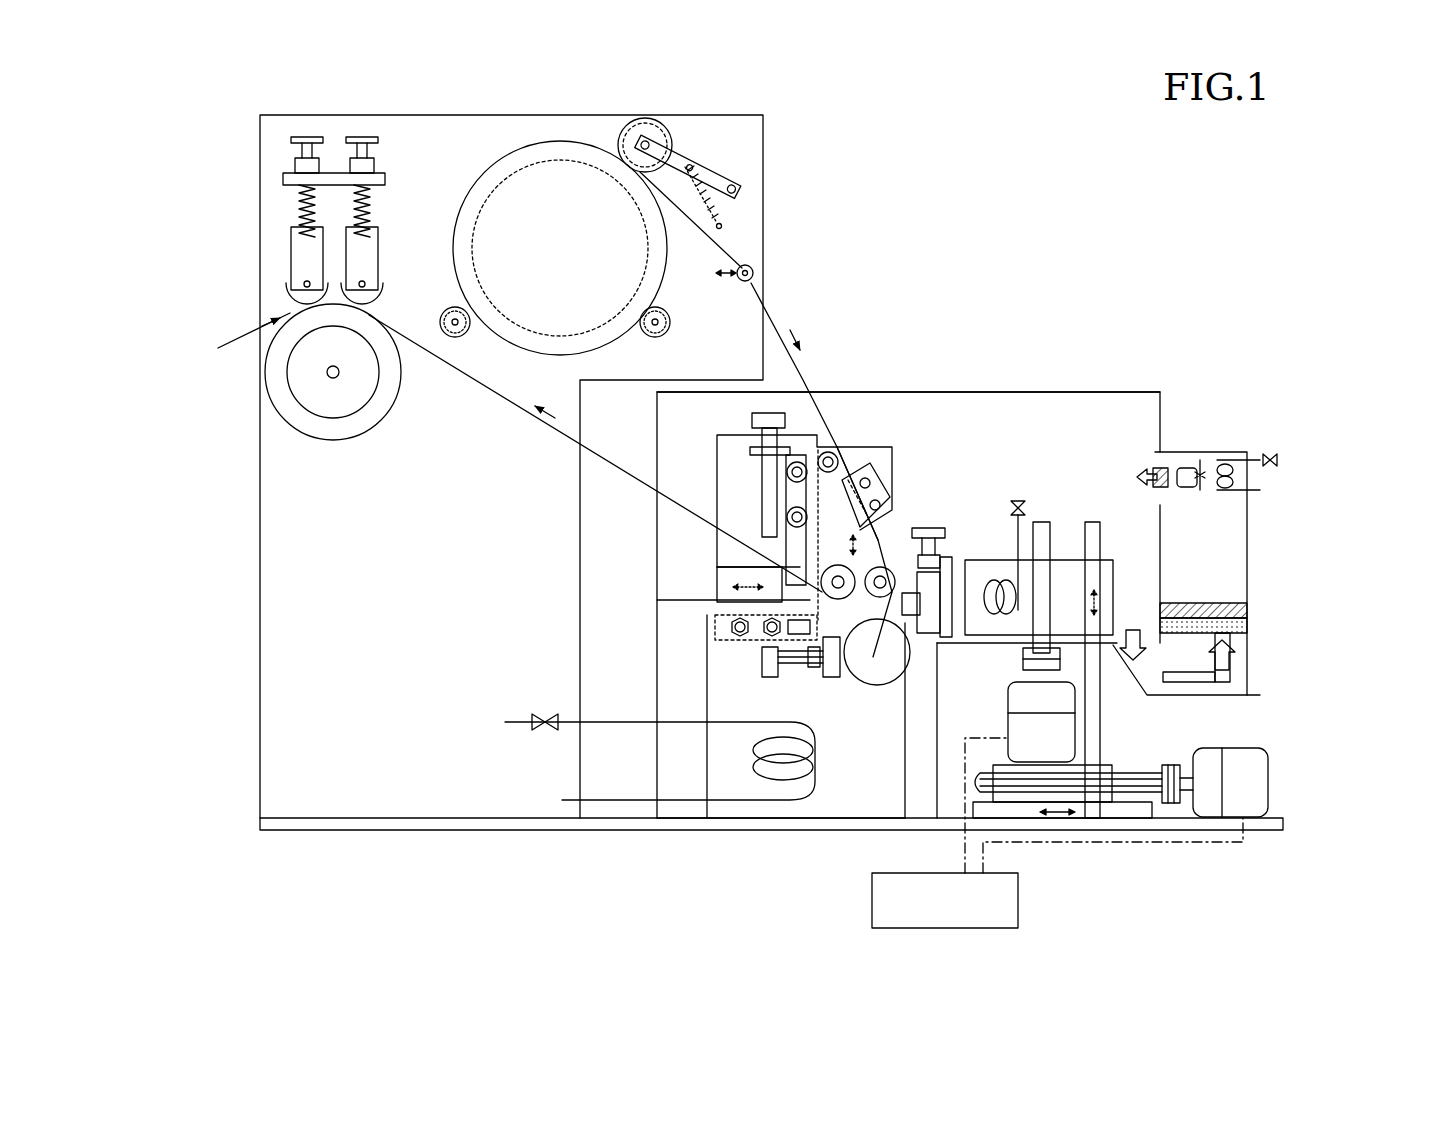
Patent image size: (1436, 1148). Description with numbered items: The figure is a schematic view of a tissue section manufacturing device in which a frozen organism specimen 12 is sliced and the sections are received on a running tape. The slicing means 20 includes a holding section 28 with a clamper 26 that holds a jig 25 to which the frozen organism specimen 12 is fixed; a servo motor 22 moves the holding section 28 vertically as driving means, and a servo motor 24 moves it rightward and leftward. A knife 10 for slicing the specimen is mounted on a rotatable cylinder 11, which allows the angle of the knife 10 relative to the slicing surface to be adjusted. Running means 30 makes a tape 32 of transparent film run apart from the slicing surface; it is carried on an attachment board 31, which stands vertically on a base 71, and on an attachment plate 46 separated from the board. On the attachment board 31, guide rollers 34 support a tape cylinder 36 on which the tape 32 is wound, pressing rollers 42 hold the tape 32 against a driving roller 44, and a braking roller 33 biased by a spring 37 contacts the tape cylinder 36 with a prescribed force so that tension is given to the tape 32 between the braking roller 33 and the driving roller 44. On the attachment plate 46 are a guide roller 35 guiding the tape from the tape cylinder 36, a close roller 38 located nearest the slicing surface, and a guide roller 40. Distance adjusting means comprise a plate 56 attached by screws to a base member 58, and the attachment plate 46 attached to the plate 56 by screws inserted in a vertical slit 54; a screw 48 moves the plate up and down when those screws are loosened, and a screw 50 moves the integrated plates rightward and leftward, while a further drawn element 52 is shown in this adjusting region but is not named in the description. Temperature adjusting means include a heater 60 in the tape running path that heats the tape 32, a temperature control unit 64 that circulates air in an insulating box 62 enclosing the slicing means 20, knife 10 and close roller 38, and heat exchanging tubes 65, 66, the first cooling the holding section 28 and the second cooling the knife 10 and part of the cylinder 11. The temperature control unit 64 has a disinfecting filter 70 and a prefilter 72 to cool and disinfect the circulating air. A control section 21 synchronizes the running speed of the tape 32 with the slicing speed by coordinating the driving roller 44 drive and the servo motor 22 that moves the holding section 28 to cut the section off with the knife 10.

The knife 10 is at (867, 673).
The cylinder 11 is at (875, 680).
The frozen organism specimen 12 is at (930, 555).
The slicing means 20 is at (1017, 415).
The control section 21 is at (1020, 887).
The servo motor 22 is at (1008, 728).
The servo motor 24 is at (1257, 758).
The jig 25 is at (917, 637).
The clamper 26 is at (978, 580).
The holding section 28 is at (1063, 558).
The running means 30 is at (600, 122).
The attachment board 31 is at (275, 545).
The tape 32 is at (773, 310).
The braking roller 33 is at (660, 125).
The guide rollers 34 is at (470, 335).
The guide roller 35 is at (830, 450).
The tape cylinder 36 is at (505, 165).
The spring 37 is at (710, 190).
The close roller 38 is at (893, 450).
The guide roller 40 is at (657, 598).
The pressing rollers 42 is at (295, 252).
The driving roller 44 is at (348, 430).
The attachment plate 46 is at (862, 447).
The screw 48 is at (763, 473).
The screw 50 is at (800, 670).
The roller unit 52 is at (750, 640).
The vertical slit 54 is at (795, 493).
The plate 56 is at (720, 573).
The base member 58 is at (850, 808).
The heater 60 is at (872, 468).
The insulating box 62 is at (1150, 392).
The temperature control unit 64 is at (1260, 528).
The heat exchanging tube 65 is at (1020, 500).
The heat exchanging tube 66 is at (598, 718).
The disinfecting filter 70 is at (1250, 612).
The base 71 is at (458, 830).
The prefilter 72 is at (1250, 632).